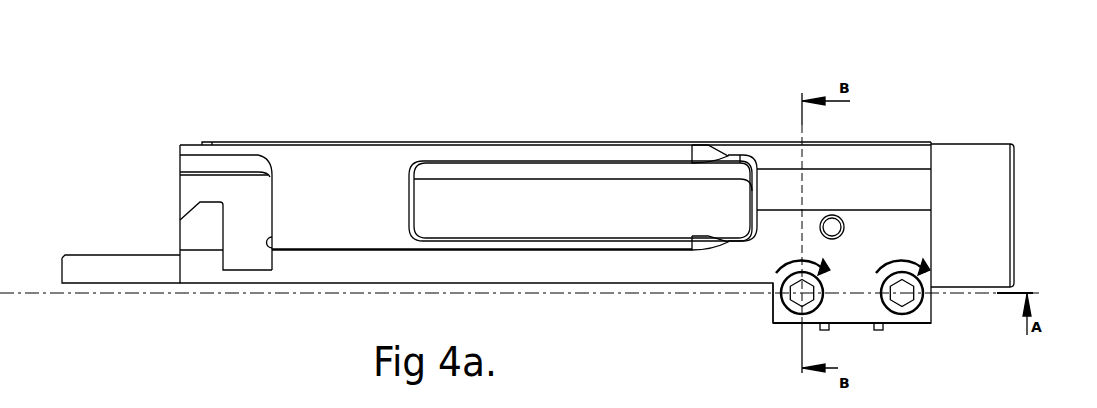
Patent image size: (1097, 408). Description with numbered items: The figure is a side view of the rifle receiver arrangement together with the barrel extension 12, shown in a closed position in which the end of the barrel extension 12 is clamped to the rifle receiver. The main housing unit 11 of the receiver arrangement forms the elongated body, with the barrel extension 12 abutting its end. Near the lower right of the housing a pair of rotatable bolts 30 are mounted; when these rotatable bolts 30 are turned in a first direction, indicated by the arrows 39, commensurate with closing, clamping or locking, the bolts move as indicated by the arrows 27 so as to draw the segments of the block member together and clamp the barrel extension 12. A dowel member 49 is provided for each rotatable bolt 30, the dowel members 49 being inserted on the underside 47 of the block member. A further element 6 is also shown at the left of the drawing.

The base plate 6 is at (90, 247).
The main housing unit 11 is at (552, 138).
The barrel extension 12 is at (974, 179).
The arrows 27 is at (845, 365).
The rotatable bolts 30 is at (783, 290).
The arrows 39 is at (793, 265).
The underside 47 is at (788, 324).
The dowel member 49 is at (880, 332).